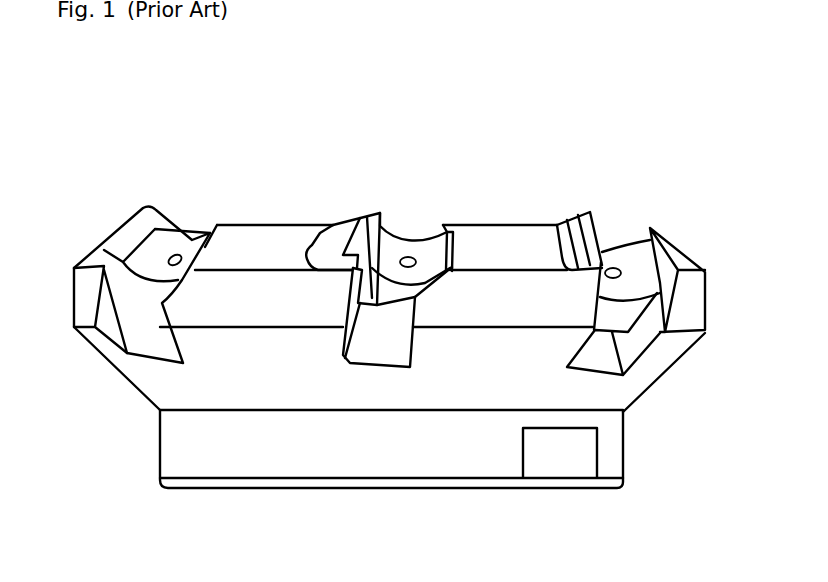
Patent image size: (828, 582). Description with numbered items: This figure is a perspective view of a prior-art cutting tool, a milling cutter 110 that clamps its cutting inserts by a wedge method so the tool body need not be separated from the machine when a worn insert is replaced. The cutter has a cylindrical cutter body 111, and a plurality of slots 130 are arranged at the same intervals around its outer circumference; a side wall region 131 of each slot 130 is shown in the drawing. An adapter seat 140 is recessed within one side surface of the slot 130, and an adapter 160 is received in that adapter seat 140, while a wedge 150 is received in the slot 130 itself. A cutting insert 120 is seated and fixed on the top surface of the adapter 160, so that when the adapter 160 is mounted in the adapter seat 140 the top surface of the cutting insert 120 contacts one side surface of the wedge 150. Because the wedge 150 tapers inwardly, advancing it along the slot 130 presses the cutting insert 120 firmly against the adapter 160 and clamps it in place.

The milling cutter 110 is at (596, 105).
The cylindrical cutter body 111 is at (247, 506).
The cutting insert 120 is at (365, 212).
The slot 130 is at (387, 354).
The side wall of lower clamp member 131 is at (363, 355).
The adapter seat 140 is at (296, 247).
The wedge 150 is at (413, 235).
The adapter 160 is at (337, 210).